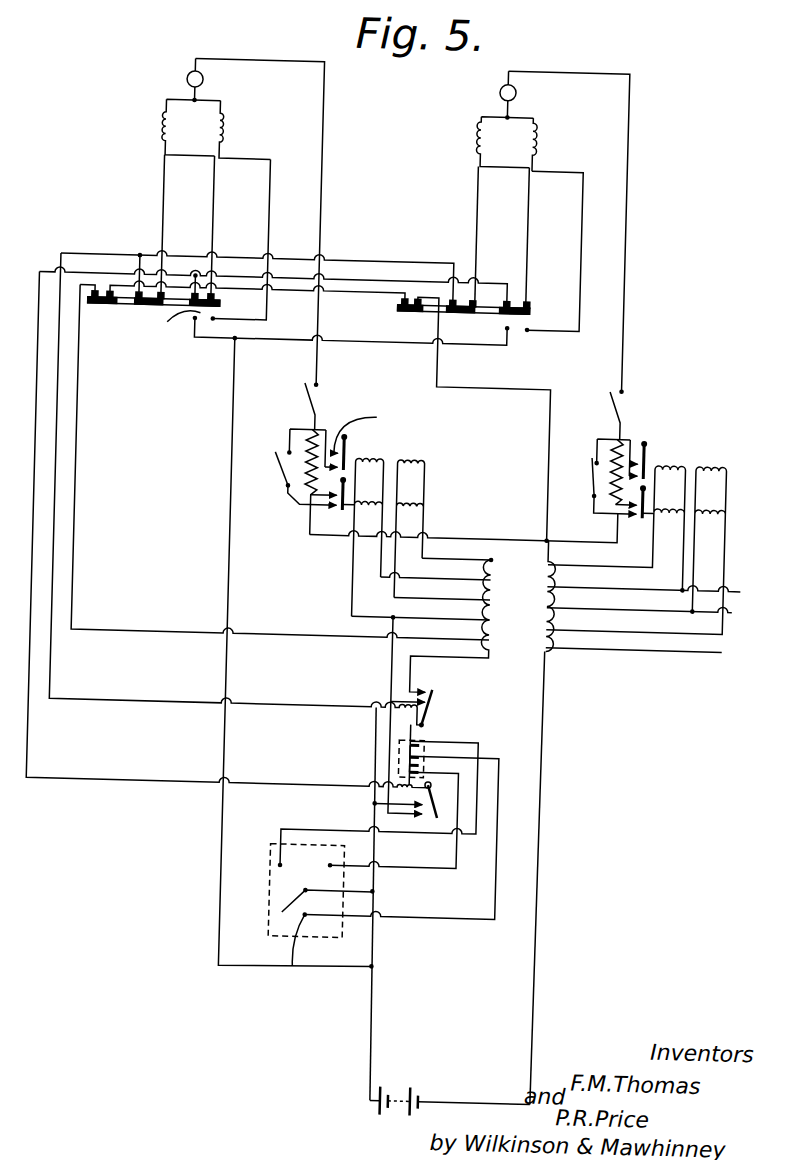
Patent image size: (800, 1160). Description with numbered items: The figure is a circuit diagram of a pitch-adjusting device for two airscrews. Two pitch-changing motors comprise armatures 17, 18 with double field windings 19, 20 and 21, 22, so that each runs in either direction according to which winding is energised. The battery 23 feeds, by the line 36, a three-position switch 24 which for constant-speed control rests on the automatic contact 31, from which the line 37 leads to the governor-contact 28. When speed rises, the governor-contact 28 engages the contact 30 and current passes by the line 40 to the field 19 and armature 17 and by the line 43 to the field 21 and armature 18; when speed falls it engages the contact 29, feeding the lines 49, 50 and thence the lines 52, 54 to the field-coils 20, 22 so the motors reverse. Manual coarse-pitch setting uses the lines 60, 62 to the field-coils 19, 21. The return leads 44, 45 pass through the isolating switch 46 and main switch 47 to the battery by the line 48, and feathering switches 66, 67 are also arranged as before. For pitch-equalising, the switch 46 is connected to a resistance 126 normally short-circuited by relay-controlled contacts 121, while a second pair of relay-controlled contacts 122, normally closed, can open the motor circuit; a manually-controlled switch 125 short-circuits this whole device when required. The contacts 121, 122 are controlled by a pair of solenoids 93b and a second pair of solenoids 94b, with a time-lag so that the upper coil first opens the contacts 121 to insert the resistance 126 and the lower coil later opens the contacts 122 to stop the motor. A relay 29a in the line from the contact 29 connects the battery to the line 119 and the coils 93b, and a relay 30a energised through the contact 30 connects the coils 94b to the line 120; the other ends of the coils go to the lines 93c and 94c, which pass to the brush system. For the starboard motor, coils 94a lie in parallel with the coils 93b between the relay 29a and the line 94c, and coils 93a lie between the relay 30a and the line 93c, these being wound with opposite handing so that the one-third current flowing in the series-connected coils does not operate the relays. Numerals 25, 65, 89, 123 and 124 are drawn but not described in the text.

The armature 17 is at (190, 84).
The armature 18 is at (503, 90).
The field winding 19 is at (150, 132).
The field winding 20 is at (212, 142).
The field winding 21 is at (467, 140).
The field winding 22 is at (522, 135).
The battery 23 is at (413, 1090).
The three-position switch 24 is at (322, 891).
The relay contact 25 is at (403, 767).
The governor-contact 28 is at (427, 754).
The contact 29 is at (436, 765).
The relay 29a is at (438, 820).
The contact 30 is at (403, 741).
The relay 30a is at (441, 712).
The automatic contact 31 is at (302, 972).
The line 36 is at (381, 1031).
The line 37 is at (503, 838).
The line 40 is at (152, 204).
The line 43 is at (466, 209).
The return lead 44 is at (311, 88).
The return lead 45 is at (617, 90).
The isolating switch 46 is at (317, 410).
The main switch 47 is at (617, 398).
The line 48 is at (513, 536).
The line 49 is at (140, 786).
The line 50 is at (140, 706).
The line 52 is at (203, 210).
The line 54 is at (517, 207).
The line 60 is at (258, 208).
The line 62 is at (571, 216).
The switch blade 65 is at (329, 333).
The feathering switch 66 is at (122, 309).
The feathering switch 67 is at (401, 317).
The conductor 89 is at (671, 647).
The coils 93a is at (660, 486).
The pair of solenoids 93b is at (365, 478).
The line 93c is at (740, 584).
The coils 94a is at (720, 461).
The pair of solenoids 94b is at (407, 478).
The line 94c is at (731, 606).
The line 119 is at (388, 626).
The line 120 is at (488, 557).
The relay-controlled contacts 121 is at (382, 429).
The relay-controlled contacts 122 is at (300, 509).
The contact 123 is at (646, 456).
The contact 124 is at (626, 508).
The manually-controlled switch 125 is at (283, 490).
The resistance 126 is at (300, 436).